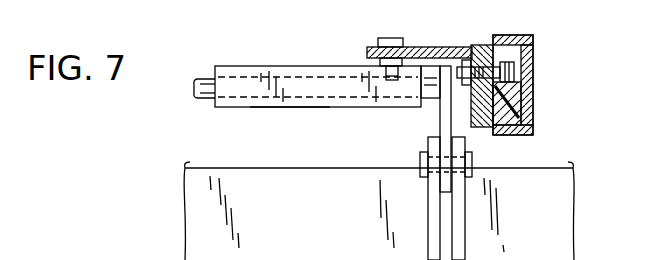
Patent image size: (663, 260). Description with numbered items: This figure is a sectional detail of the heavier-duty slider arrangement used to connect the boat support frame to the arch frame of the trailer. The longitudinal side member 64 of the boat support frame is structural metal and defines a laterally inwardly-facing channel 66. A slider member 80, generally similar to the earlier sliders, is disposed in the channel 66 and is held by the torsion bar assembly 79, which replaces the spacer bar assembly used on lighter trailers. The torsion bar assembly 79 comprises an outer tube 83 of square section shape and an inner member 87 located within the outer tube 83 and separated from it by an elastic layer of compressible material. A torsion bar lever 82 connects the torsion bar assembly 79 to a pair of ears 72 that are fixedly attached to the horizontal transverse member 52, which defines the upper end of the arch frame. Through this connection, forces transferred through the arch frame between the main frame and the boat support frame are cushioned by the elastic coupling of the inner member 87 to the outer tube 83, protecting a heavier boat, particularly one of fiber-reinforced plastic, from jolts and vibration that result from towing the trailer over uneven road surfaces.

The horizontal transverse member 52 is at (308, 219).
The longitudinal side member 64 is at (545, 63).
The channel 66 is at (483, 48).
The ears 72 is at (433, 212).
The torsion bar assembly 79 is at (298, 66).
The slider member 80 is at (518, 98).
The torsion bar lever 82 is at (443, 112).
The outer tube 83 is at (298, 107).
The inner member 87 is at (200, 100).